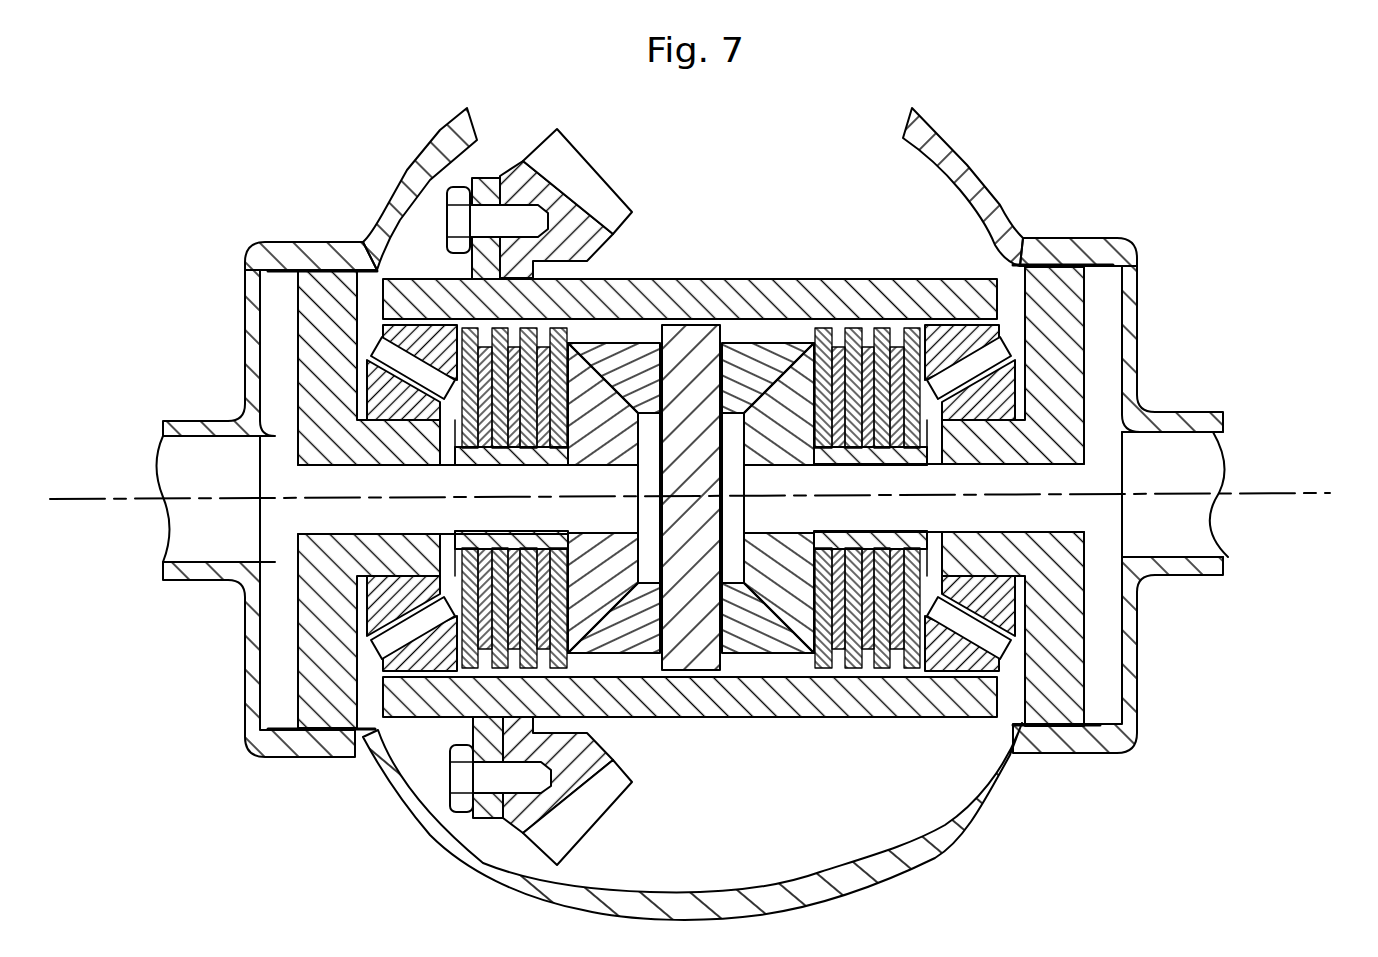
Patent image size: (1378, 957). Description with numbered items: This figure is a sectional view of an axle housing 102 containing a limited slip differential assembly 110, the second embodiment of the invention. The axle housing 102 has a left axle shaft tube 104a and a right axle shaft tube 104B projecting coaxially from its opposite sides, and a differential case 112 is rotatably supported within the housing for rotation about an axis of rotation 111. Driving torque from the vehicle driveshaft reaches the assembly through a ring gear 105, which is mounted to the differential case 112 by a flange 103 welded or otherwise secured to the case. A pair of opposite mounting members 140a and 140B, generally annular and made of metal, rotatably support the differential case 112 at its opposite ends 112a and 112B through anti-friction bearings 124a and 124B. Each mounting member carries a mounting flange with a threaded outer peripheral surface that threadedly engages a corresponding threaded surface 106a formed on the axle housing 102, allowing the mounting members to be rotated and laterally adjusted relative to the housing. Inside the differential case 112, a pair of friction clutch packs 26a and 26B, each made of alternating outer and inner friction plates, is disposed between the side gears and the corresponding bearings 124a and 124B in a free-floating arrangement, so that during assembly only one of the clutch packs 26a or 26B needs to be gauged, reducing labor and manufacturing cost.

The axle housing 102 is at (957, 170).
The flange 103 is at (482, 182).
The left axle shaft tube 104a is at (212, 578).
The right axle shaft tube 104B is at (1186, 578).
The ring gear 105 is at (582, 190).
The threaded surface 106a is at (272, 722).
The limited slip differential assembly 110 is at (750, 167).
The axis of rotation 111 is at (1290, 495).
The differential case 112 is at (692, 718).
The end of differential case 112a is at (456, 707).
The end of differential case 112B is at (849, 706).
The anti-friction bearing 124a is at (372, 656).
The anti-friction bearing 124B is at (1013, 735).
The mounting member 140a is at (298, 345).
The mounting member 140B is at (1088, 319).
The friction clutch pack 26a is at (460, 412).
The friction clutch pack 26B is at (923, 409).